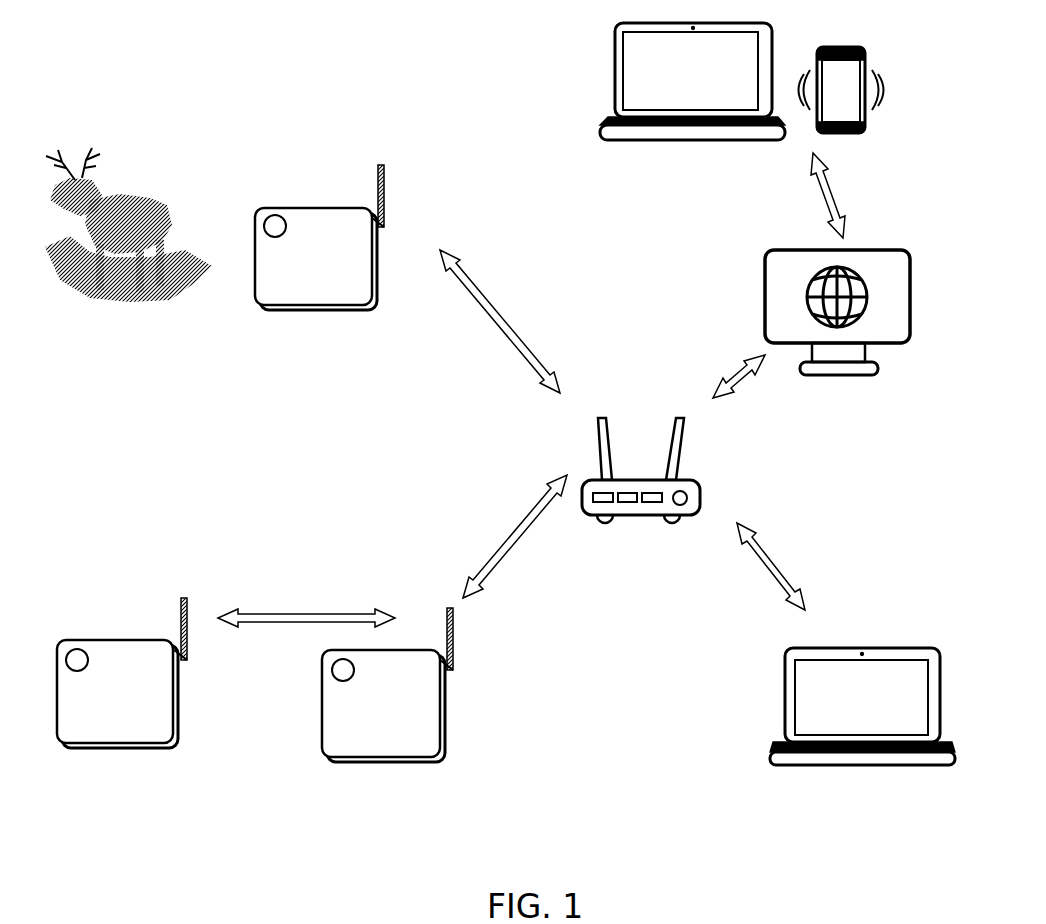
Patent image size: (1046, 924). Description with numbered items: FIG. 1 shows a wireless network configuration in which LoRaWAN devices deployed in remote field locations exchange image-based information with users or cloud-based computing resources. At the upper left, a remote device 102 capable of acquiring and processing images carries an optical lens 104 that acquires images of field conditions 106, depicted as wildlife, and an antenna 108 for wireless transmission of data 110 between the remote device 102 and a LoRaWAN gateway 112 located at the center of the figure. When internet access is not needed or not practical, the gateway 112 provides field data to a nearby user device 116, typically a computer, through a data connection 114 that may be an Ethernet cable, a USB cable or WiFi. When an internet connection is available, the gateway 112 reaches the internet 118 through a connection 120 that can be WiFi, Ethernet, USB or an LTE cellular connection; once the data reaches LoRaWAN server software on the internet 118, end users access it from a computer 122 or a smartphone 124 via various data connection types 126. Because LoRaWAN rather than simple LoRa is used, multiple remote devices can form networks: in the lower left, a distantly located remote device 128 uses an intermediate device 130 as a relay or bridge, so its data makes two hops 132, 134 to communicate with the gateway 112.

The remote device 102 is at (354, 250).
The optical lens 104 is at (285, 232).
The field conditions 106 is at (190, 290).
The antenna 108 is at (386, 170).
The data 110 is at (508, 354).
The LoRaWAN gateway 112 is at (633, 518).
The data connection 114 is at (772, 573).
The user device 116 is at (902, 770).
The internet 118 is at (878, 375).
The connection 120 is at (748, 382).
The computer 122 is at (700, 138).
The smartphone 124 is at (866, 135).
The data connection types 126 is at (822, 185).
The distantly located remote device 128 is at (183, 738).
The intermediate device 130 is at (445, 757).
The hop 132 is at (283, 623).
The hop 134 is at (512, 567).